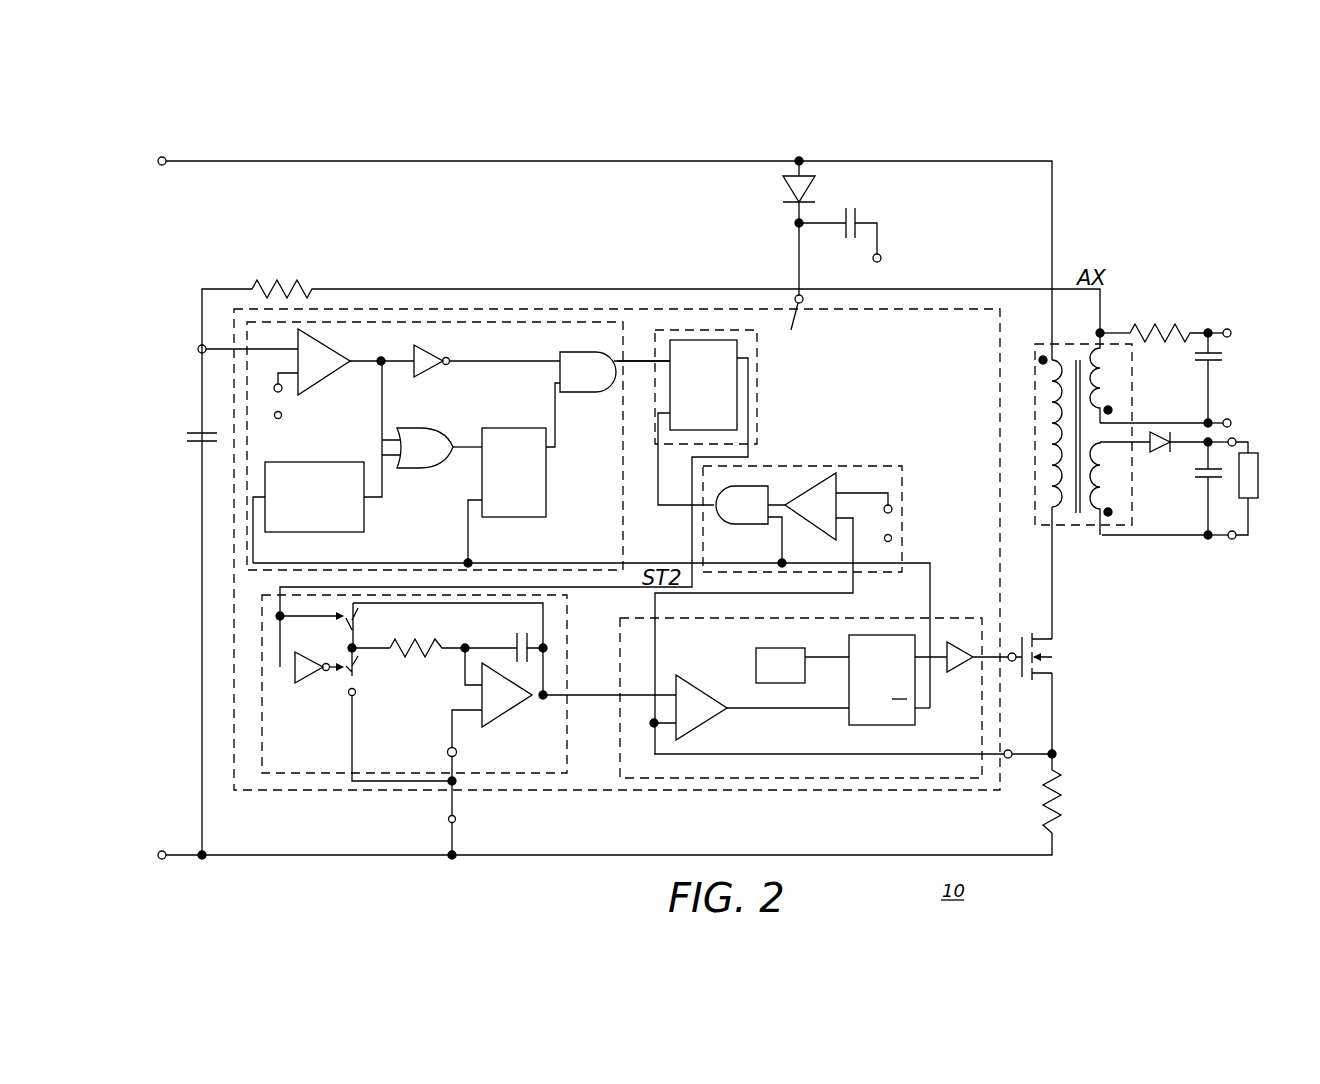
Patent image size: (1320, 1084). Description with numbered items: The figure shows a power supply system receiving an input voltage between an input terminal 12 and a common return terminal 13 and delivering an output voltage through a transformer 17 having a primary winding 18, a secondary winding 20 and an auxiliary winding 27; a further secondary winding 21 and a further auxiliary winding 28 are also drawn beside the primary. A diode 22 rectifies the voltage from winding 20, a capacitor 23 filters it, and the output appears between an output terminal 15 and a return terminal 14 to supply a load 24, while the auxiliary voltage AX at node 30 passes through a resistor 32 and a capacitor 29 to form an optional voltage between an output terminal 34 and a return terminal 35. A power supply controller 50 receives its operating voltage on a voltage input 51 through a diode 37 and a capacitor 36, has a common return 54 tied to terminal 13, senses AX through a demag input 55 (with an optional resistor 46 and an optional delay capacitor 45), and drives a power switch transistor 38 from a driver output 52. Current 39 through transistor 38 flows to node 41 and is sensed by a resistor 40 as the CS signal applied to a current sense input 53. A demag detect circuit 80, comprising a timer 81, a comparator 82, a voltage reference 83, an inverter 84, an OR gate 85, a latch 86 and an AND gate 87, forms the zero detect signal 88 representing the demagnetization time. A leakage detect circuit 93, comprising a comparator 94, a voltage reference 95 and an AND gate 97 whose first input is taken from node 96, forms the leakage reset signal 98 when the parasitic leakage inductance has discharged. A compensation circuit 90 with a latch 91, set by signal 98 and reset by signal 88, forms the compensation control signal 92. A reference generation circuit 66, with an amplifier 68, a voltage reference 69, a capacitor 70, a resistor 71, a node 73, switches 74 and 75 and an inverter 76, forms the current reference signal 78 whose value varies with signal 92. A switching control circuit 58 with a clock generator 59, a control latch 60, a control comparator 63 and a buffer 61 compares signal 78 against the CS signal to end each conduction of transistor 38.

The input terminal 12 is at (164, 157).
The common return terminal 13 is at (159, 851).
The return terminal 14 is at (1235, 531).
The output terminal 15 is at (1236, 438).
The transformer 17 is at (1037, 525).
The primary winding 18 is at (1050, 440).
The secondary winding 20 is at (1095, 518).
The load current 21 is at (1100, 458).
The diode 22 is at (1163, 455).
The capacitor 23 is at (1197, 474).
The load 24 is at (1258, 482).
The auxiliary winding 27 is at (1093, 365).
The auxiliary winding 28 is at (1100, 362).
The capacitor 29 is at (1195, 362).
The node 30 is at (1103, 330).
The resistor 32 is at (1160, 342).
The output terminal 34 is at (1229, 329).
The return terminal 35 is at (1230, 419).
The capacitor 36 is at (850, 208).
The diode 37 is at (783, 185).
The transistor 38 is at (1048, 652).
The current 39 is at (1052, 562).
The resistor 40 is at (1062, 802).
The node 41 is at (1055, 751).
The capacitor 45 is at (187, 437).
The resistor 46 is at (282, 287).
The power supply controller 50 is at (505, 790).
The voltage input 51 is at (803, 308).
The driver output 52 is at (1010, 652).
The current sense input 53 is at (1010, 758).
The common return 54 is at (281, 419).
The demag input 55 is at (198, 349).
The switching control circuit 58 is at (862, 618).
The clock generator 59 is at (783, 683).
The control latch 60 is at (860, 726).
The buffer 61 is at (958, 642).
The control comparator 63 is at (690, 680).
The reference generation circuit 66 is at (567, 600).
The amplifier 68 is at (510, 712).
The voltage reference 69 is at (447, 750).
The capacitor 70 is at (517, 635).
The resistor 71 is at (430, 642).
The node 73 is at (358, 644).
The switch 74 is at (345, 628).
The switch 75 is at (350, 688).
The inverter 76 is at (322, 677).
The current reference signal 78 is at (565, 693).
The demag detect circuit 80 is at (270, 580).
The timer 81 is at (332, 462).
The comparator 82 is at (332, 378).
The voltage reference 83 is at (282, 391).
The inverter 84 is at (437, 352).
The OR gate 85 is at (430, 428).
The latch 86 is at (530, 428).
The AND gate 87 is at (565, 352).
The zero detect signal 88 is at (645, 363).
The compensation circuit 90 is at (757, 385).
The latch 91 is at (737, 418).
The compensation control signal 92 is at (748, 355).
The leakage detect circuit 93 is at (808, 466).
The comparator 94 is at (822, 528).
The voltage reference 95 is at (892, 507).
The node 96 is at (780, 540).
The AND gate 97 is at (740, 524).
The leakage reset signal 98 is at (662, 507).